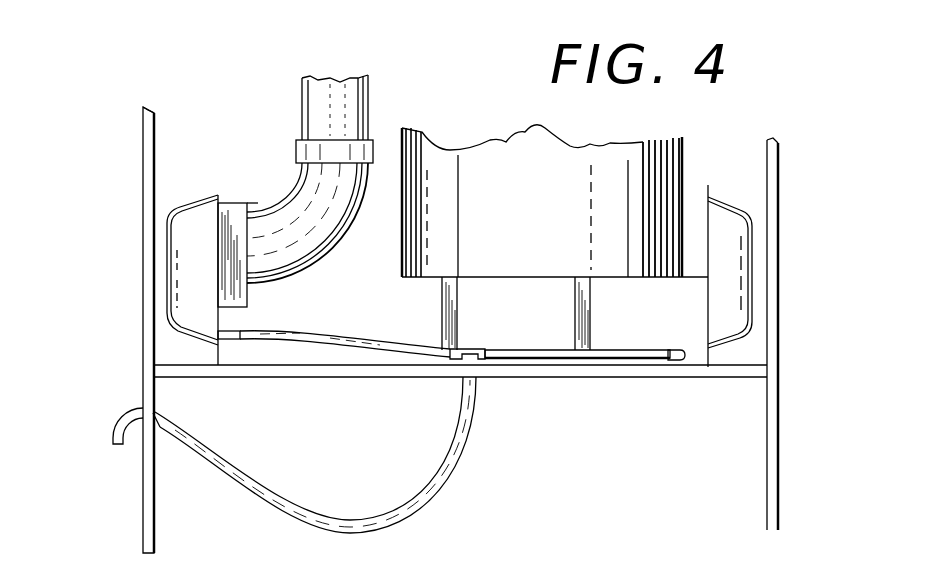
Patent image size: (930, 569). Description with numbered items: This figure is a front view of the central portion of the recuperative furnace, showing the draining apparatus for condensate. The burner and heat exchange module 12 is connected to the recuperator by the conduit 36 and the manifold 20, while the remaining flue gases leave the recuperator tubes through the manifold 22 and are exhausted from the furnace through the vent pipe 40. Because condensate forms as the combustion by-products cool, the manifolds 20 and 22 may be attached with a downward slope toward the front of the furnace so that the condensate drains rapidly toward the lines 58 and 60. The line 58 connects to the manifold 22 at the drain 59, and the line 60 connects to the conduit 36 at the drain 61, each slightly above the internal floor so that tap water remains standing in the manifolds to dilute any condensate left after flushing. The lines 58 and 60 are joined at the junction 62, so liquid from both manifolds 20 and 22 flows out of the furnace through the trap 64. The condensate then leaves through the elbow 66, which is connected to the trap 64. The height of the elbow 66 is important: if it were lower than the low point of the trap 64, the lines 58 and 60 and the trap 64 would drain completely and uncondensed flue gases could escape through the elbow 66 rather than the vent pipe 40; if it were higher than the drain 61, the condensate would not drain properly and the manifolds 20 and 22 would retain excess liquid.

The burner and heat exchange module 12 is at (401, 250).
The manifold 20 is at (737, 206).
The manifold 22 is at (217, 197).
The conduit 36 is at (441, 310).
The vent pipe 40 is at (302, 105).
The line 58 is at (323, 337).
The drain 59 is at (238, 336).
The line 60 is at (572, 352).
The drain 61 is at (673, 350).
The junction 62 is at (476, 349).
The trap 64 is at (373, 523).
The elbow 66 is at (130, 413).